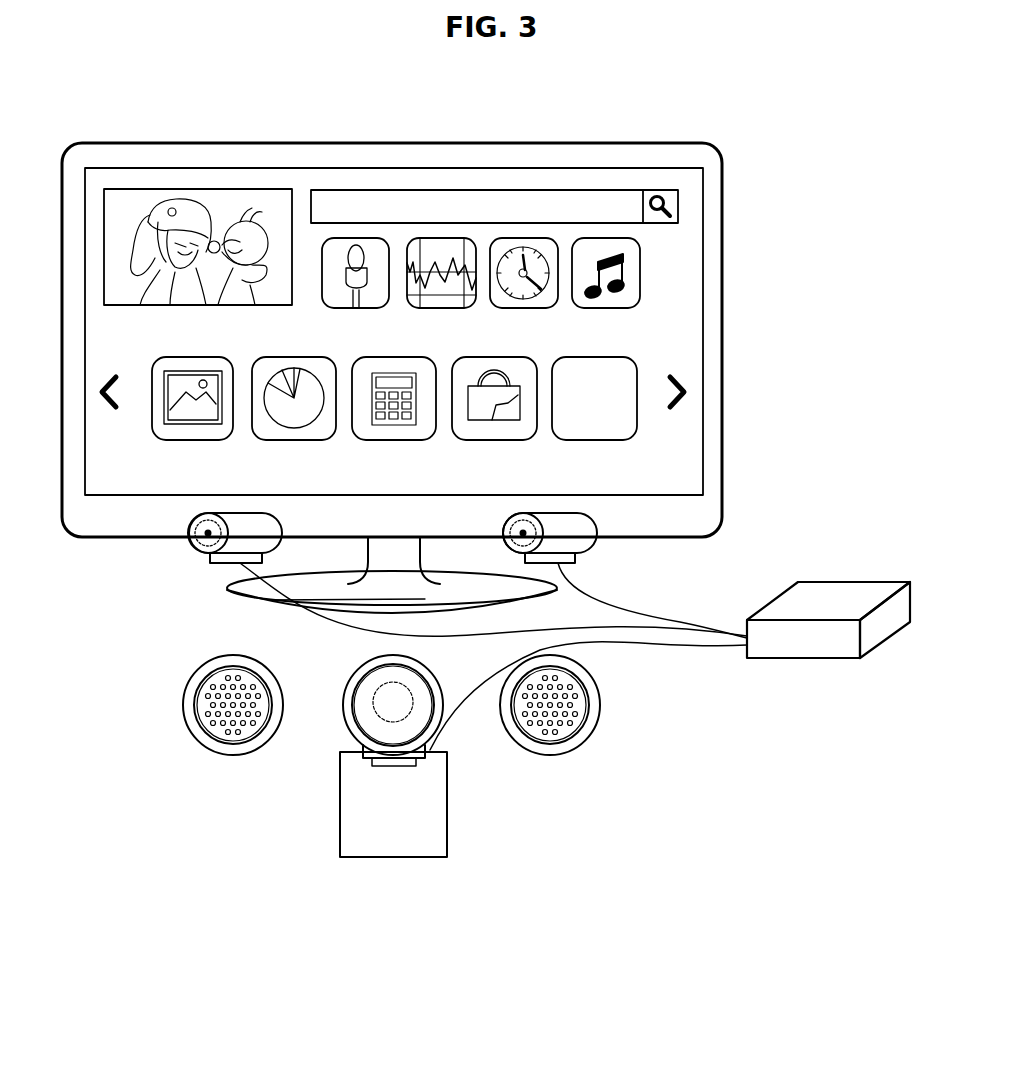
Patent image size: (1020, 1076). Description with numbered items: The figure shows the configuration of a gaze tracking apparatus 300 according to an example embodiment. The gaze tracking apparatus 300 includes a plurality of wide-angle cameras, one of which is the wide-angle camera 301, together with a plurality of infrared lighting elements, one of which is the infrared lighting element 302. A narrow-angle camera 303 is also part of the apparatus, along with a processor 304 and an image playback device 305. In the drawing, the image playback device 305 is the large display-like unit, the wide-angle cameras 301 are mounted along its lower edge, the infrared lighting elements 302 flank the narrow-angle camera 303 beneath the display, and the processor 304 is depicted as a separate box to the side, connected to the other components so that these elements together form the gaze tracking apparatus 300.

The gaze tracking apparatus 300 is at (422, 106).
The wide-angle camera 301 is at (190, 548).
The infrared lighting element 302 is at (183, 703).
The narrow-angle camera 303 is at (393, 856).
The processor 304 is at (853, 582).
The image playback device 305 is at (723, 340).